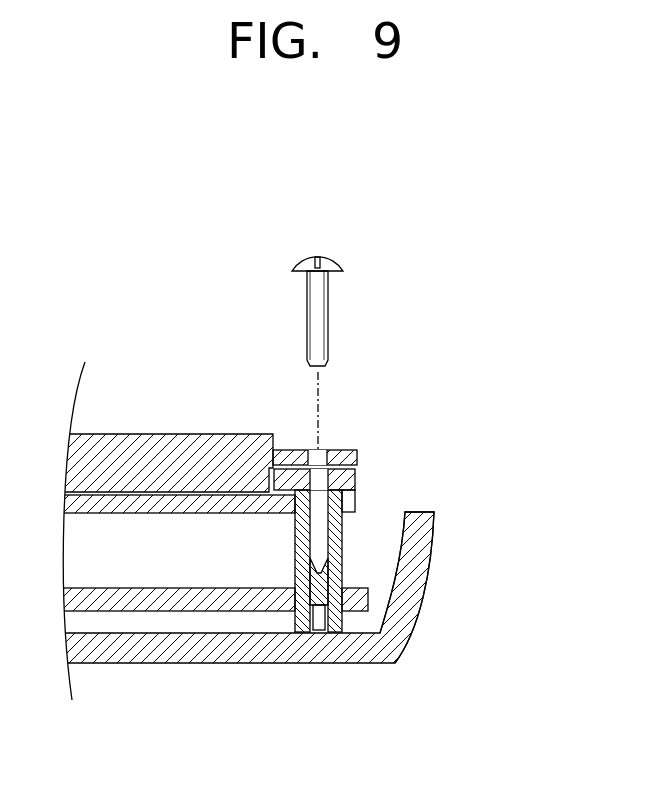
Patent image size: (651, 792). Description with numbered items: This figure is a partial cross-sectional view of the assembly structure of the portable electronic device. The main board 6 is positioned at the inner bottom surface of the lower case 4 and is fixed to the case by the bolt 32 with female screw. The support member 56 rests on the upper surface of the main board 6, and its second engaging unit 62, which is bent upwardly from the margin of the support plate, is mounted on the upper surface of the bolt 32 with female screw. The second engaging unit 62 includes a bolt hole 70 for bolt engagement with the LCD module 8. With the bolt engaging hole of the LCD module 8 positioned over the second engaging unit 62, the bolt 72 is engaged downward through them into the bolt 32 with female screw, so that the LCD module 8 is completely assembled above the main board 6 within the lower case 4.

The lower case 4 is at (281, 645).
The main board 6 is at (203, 600).
The LCD module 8 is at (133, 450).
The bolt with female screw 32 is at (345, 547).
The support member 56 is at (186, 500).
The second engaging unit 62 is at (355, 477).
The bolt hole 70 is at (325, 452).
The bolt 72 is at (330, 267).